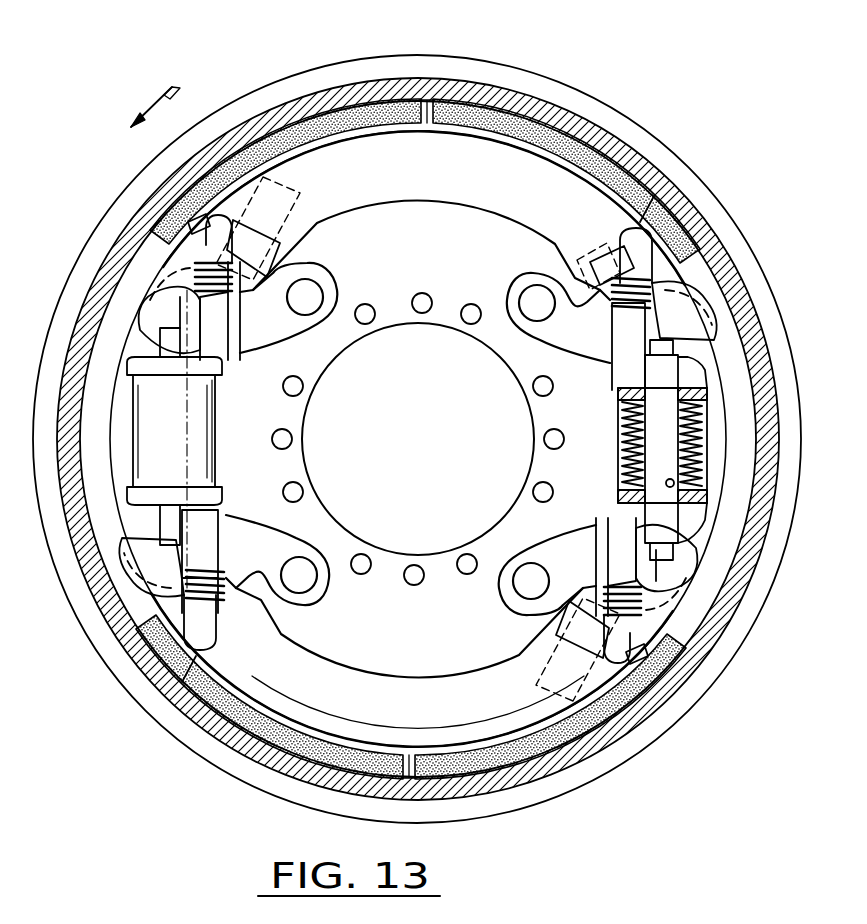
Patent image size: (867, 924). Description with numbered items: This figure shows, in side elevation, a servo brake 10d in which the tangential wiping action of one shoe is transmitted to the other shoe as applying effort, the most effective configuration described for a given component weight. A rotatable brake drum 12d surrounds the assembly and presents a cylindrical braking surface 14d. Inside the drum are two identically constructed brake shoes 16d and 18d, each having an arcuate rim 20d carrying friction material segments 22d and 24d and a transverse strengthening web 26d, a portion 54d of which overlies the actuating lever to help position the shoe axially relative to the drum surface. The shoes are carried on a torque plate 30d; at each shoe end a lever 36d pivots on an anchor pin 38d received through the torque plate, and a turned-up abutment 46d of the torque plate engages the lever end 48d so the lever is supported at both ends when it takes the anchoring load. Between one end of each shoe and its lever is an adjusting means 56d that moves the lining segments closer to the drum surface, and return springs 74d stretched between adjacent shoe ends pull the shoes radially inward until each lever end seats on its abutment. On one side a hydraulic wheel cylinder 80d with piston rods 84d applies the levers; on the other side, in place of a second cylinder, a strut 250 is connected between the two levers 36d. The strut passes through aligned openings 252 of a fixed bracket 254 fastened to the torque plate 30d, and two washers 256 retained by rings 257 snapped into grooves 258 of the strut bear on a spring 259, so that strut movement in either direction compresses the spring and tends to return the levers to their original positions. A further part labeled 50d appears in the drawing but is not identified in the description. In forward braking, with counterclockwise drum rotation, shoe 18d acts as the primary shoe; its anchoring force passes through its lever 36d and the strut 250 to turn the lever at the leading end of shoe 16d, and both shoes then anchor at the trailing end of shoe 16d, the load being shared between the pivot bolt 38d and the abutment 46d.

The brake 10d is at (592, 36).
The brake drum 12d is at (230, 135).
The cylindrical braking surface 14d is at (455, 100).
The brake shoe 16d is at (458, 174).
The brake shoe 18d is at (431, 717).
The arcuate rim 20d is at (560, 132).
The friction material segment 22d is at (310, 128).
The friction material segment 24d is at (605, 155).
The shoe web 26d is at (427, 200).
The torque plate 30d is at (393, 563).
The lever 36d is at (563, 343).
The anchor pin 38d is at (530, 304).
The abutment 46d is at (125, 330).
The lever end 48d is at (120, 290).
The strut 50d is at (231, 337).
The web portion 54d is at (140, 560).
The adjusting means 56d is at (256, 288).
The return spring 74d is at (208, 612).
The wheel cylinder 80d is at (166, 425).
The piston rod 84d is at (212, 520).
The strut 250 is at (663, 373).
The aligned openings 252 is at (684, 392).
The fixed bracket 254 is at (700, 427).
The washer 256 is at (634, 402).
The ring 257 is at (628, 445).
The groove 258 is at (674, 482).
The spring 259 is at (628, 490).